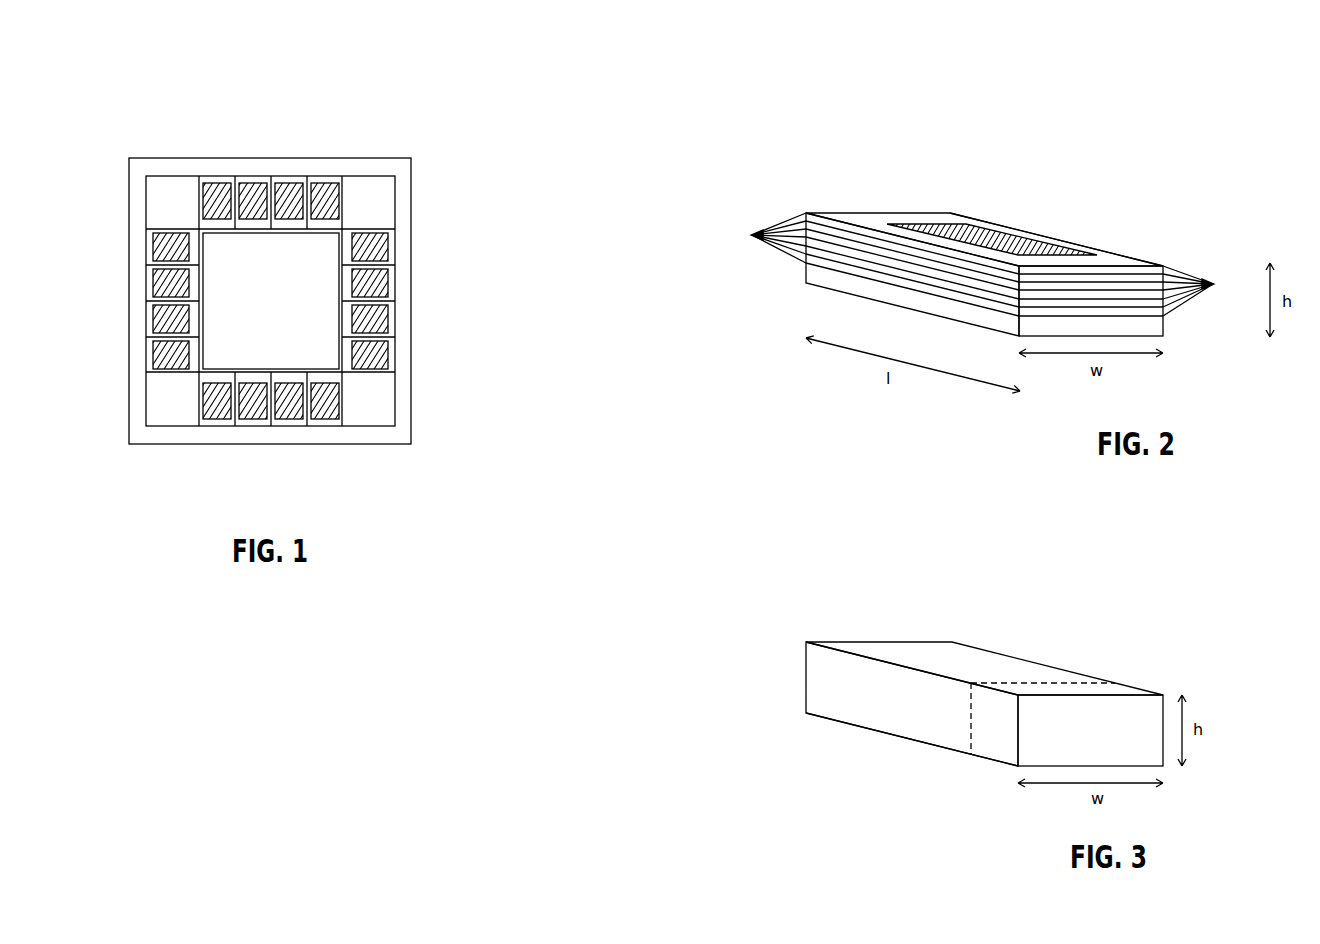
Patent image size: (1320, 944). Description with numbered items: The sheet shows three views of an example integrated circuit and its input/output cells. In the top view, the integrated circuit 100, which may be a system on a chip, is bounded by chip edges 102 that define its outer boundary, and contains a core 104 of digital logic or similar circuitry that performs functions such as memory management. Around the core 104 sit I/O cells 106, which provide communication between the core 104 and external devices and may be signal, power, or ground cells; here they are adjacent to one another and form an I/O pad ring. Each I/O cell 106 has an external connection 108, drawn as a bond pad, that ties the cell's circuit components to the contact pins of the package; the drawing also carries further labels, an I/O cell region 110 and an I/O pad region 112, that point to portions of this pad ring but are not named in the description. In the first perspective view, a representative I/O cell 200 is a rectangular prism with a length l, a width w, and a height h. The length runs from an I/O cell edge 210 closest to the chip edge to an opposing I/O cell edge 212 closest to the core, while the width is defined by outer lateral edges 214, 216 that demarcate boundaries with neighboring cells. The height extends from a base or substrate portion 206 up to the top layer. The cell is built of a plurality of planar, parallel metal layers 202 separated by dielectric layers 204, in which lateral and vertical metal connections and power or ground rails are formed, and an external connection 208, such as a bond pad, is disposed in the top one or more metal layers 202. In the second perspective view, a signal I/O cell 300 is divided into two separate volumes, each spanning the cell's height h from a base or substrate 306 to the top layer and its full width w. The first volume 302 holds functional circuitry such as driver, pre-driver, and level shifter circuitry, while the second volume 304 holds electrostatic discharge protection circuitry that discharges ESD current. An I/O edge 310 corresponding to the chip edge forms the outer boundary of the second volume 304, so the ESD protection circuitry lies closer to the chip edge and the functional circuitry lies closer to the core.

In FIG. 1, the integrated circuit 100 is at (67, 97).
In FIG. 1, the chip edges 102 is at (165, 158).
In FIG. 1, the core 104 is at (271, 301).
In FIG. 1, the I/O cells 106 is at (220, 193).
In FIG. 1, the external connection 108 is at (283, 176).
In FIG. 1, the I/O cell 110 is at (226, 176).
In FIG. 1, the I/O pad cell 112 is at (342, 247).
In FIG. 2, the I/O cell 200 is at (835, 149).
In FIG. 2, the metal layers 202 is at (764, 238).
In FIG. 2, the dielectric layers 204 is at (1202, 291).
In FIG. 2, the base or substrate portion 206 is at (908, 309).
In FIG. 2, the external connection 208 is at (1007, 238).
In FIG. 2, the I/O cell edge 210 is at (1120, 266).
In FIG. 2, the opposing I/O cell edge 212 is at (880, 213).
In FIG. 2, the outer lateral edge 214 is at (1068, 240).
In FIG. 2, the outer lateral edge 216 is at (847, 219).
In FIG. 3, the signal I/O cell 300 is at (835, 579).
In FIG. 3, the first volume 302 is at (882, 703).
In FIG. 3, the second volume 304 is at (1007, 742).
In FIG. 3, the base or substrate 306 is at (903, 737).
In FIG. 3, the I/O edge 310 is at (1118, 695).